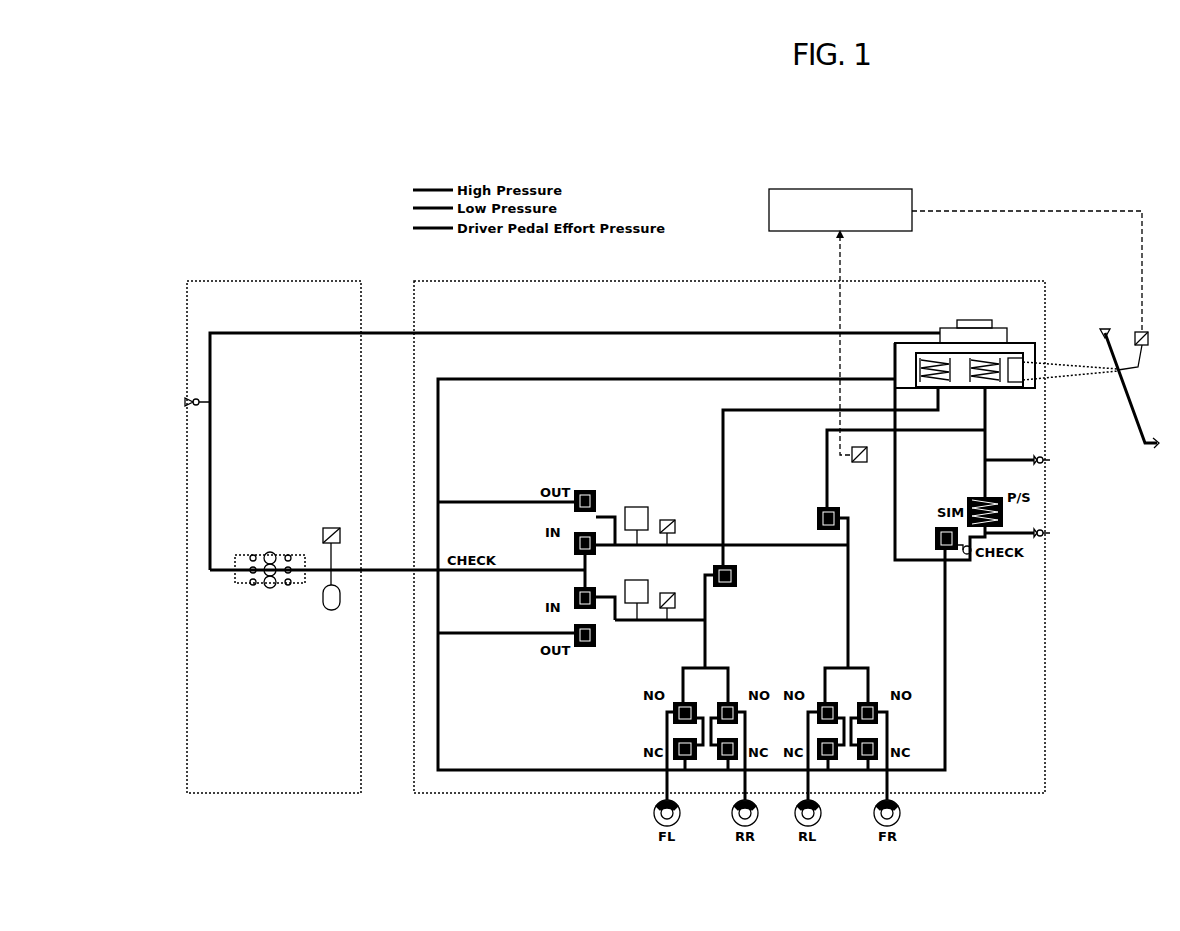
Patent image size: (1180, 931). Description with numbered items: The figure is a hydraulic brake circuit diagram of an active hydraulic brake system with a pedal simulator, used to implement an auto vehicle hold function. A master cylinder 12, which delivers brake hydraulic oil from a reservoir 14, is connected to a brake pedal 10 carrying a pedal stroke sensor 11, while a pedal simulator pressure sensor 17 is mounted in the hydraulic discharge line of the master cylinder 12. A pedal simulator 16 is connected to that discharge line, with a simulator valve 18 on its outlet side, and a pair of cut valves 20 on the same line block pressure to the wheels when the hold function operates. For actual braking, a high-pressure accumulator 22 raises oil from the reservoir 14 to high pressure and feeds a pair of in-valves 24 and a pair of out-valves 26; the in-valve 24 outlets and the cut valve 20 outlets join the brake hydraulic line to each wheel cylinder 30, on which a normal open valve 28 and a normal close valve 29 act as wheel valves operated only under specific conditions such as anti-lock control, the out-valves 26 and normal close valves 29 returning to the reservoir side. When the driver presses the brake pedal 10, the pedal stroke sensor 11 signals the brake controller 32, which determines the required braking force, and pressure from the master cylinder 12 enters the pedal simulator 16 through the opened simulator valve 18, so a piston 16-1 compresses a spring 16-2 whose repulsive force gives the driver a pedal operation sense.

The brake pedal 10 is at (1127, 404).
The pedal stroke sensor 11 is at (1134, 337).
The master cylinder 12 is at (1000, 388).
The reservoir 14 is at (1000, 328).
The pedal simulator 16 is at (965, 494).
The piston 16-1 is at (1005, 503).
The spring 16-2 is at (1005, 516).
The pedal simulator pressure sensor 17 is at (860, 463).
The simulator valve 18 is at (937, 528).
The cut valve 20 is at (740, 568).
The high-pressure accumulator 22 is at (322, 597).
The in-valve 24 is at (600, 550).
The out-valve 26 is at (598, 498).
The normal open valve 28 is at (738, 700).
The normal close valve 29 is at (740, 740).
The wheel cylinder 30 is at (654, 806).
The brake controller 32 is at (912, 194).